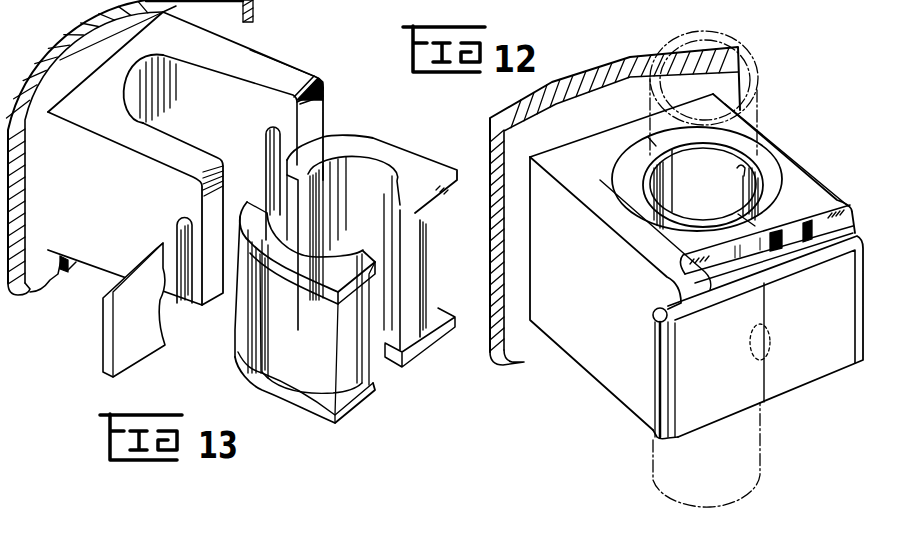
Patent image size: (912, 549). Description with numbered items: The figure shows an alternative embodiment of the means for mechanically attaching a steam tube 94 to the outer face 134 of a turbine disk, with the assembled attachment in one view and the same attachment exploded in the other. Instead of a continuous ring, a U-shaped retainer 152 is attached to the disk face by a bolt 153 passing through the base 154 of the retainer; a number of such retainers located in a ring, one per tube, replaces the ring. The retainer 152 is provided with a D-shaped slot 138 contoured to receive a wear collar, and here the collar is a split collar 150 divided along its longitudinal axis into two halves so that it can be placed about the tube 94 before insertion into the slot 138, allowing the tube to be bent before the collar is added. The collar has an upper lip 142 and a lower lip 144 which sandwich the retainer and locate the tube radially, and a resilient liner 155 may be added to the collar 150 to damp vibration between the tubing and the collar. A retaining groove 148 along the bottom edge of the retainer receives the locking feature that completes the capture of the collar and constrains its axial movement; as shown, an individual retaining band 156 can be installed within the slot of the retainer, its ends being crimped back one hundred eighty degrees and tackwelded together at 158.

In FIG. 12, the tube 94 is at (760, 110).
In FIG. 13, the outer face 134 is at (66, 44).
In FIG. 12, the outer face 134 is at (510, 116).
In FIG. 13, the D-shaped slot 138 is at (177, 171).
In FIG. 12, the D-shaped slot 138 is at (712, 266).
In FIG. 13, the upper lip 142 is at (377, 251).
In FIG. 12, the upper lip 142 is at (662, 252).
In FIG. 13, the lower lip 144 is at (310, 412).
In FIG. 13, the retaining groove 148 is at (241, 8).
In FIG. 12, the retaining groove 148 is at (657, 315).
In FIG. 13, the split collar 150 is at (351, 281).
In FIG. 12, the split collar 150 is at (738, 203).
In FIG. 13, the U-shaped retainer 152 is at (277, 62).
In FIG. 12, the U-shaped retainer 152 is at (838, 206).
In FIG. 13, the bolt 153 is at (178, 113).
In FIG. 13, the base of U-shaped retainer 154 is at (100, 76).
In FIG. 12, the base of U-shaped retainer 154 is at (640, 128).
In FIG. 13, the resilient liner 155 is at (374, 211).
In FIG. 12, the resilient liner 155 is at (757, 177).
In FIG. 13, the retaining band 156 is at (100, 335).
In FIG. 12, the retaining band 156 is at (765, 336).
In FIG. 12, the tackweld 158 is at (772, 342).